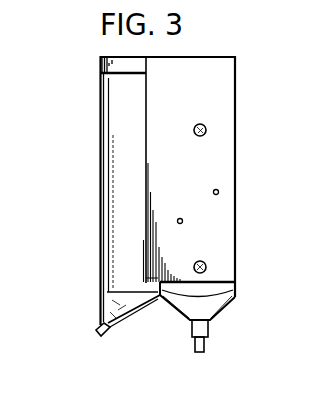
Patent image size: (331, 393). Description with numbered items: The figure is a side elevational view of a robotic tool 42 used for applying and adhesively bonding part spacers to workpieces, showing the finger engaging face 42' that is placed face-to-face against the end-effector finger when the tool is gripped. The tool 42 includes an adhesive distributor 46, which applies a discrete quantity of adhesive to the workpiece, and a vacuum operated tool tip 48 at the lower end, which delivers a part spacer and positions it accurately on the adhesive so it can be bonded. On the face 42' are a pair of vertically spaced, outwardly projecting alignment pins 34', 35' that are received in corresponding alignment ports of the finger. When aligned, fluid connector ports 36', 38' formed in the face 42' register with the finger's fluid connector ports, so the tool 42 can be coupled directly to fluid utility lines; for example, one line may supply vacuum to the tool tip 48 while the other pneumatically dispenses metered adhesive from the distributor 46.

The robotic tool 42 is at (157, 196).
The finger engaging face 42' is at (189, 196).
The adhesive distributor 46 is at (112, 245).
The alignment pin 34' is at (237, 121).
The fluid connector port 36' is at (248, 177).
The fluid connector port 38' is at (230, 218).
The alignment pin 35' is at (238, 271).
The vacuum operated tool tip 48 is at (206, 350).